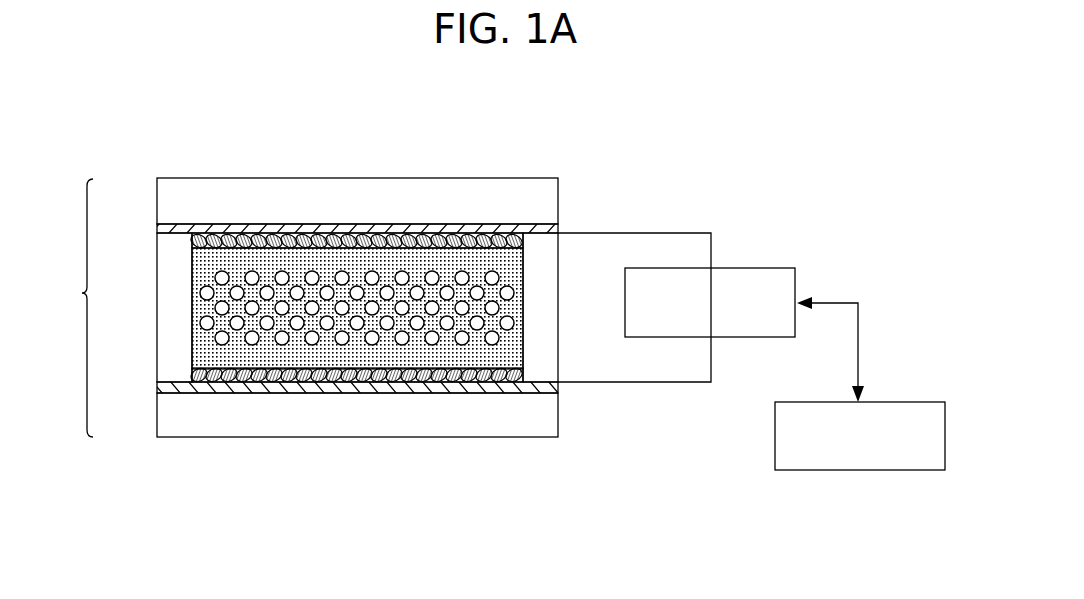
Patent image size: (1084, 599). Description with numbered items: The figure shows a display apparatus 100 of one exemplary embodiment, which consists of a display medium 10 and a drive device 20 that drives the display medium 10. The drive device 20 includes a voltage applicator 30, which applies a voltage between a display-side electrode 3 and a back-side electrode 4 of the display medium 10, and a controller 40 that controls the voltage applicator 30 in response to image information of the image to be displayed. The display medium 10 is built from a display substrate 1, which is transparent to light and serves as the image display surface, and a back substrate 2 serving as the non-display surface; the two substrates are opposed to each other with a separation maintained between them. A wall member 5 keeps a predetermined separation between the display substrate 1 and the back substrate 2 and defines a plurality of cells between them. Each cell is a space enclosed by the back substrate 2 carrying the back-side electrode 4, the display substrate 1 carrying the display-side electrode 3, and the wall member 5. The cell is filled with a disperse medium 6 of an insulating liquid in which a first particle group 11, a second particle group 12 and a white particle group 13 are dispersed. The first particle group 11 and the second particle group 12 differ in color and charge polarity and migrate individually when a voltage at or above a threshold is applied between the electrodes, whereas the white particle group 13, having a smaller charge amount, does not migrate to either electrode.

The display substrate 1 is at (412, 178).
The back substrate 2 is at (413, 437).
The display-side electrode 3 is at (157, 230).
The back-side electrode 4 is at (157, 386).
The wall member 5 is at (157, 322).
The disperse medium 6 is at (523, 355).
The display medium 10 is at (71, 308).
The first particle group 11 is at (192, 241).
The second particle group 12 is at (192, 375).
The white particle group 13 is at (192, 287).
The drive device 20 is at (861, 256).
The voltage applicator 30 is at (755, 267).
The controller 40 is at (903, 401).
The display apparatus 100 is at (678, 113).